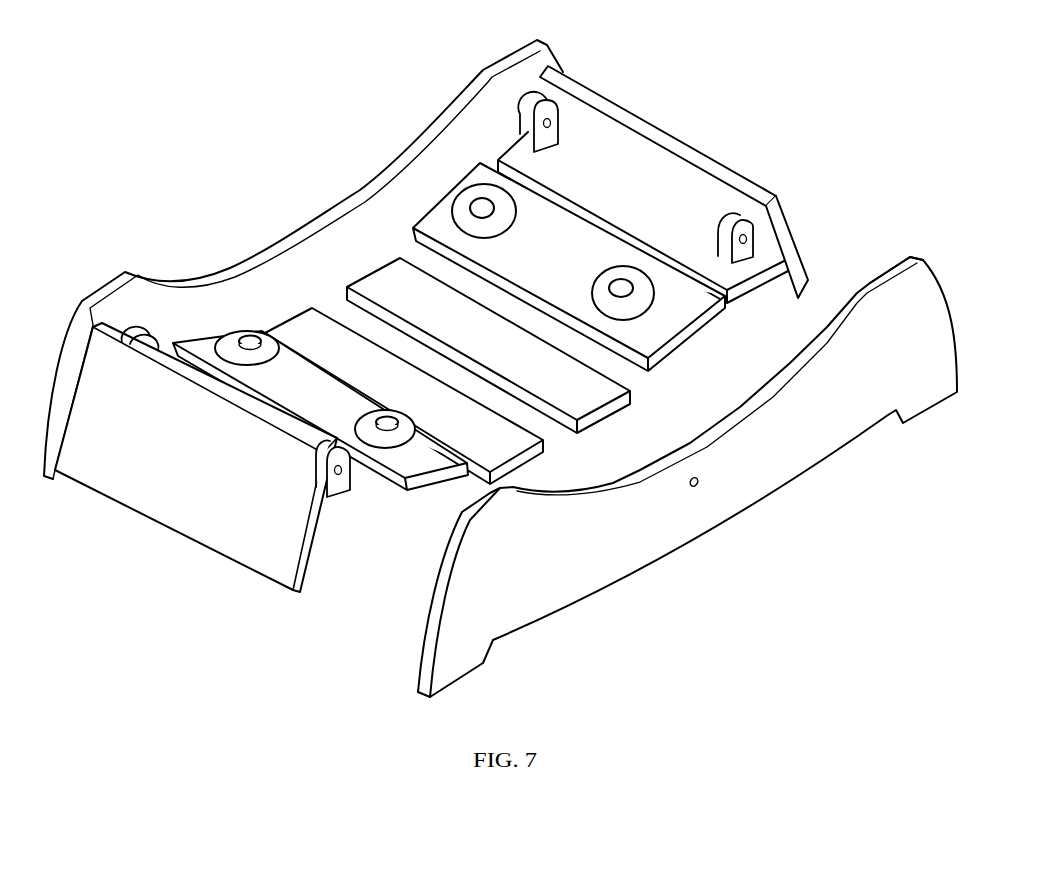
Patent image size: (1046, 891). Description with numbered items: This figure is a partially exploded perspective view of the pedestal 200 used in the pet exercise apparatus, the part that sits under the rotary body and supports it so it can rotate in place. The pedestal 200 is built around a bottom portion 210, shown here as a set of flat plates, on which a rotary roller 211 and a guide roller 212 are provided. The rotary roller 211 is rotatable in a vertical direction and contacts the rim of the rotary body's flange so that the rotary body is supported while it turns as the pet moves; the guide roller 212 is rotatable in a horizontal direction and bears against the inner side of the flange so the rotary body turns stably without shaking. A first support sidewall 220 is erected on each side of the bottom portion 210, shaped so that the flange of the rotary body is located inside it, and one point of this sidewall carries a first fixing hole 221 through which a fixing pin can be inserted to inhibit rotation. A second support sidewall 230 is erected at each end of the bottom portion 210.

The pedestal 200 is at (279, 127).
The bottom portion 210 is at (523, 160).
The rotary roller 211 is at (740, 215).
The guide roller 212 is at (638, 282).
The first support sidewall 220 is at (212, 298).
The first fixing hole 221 is at (697, 483).
The second support sidewall 230 is at (647, 127).